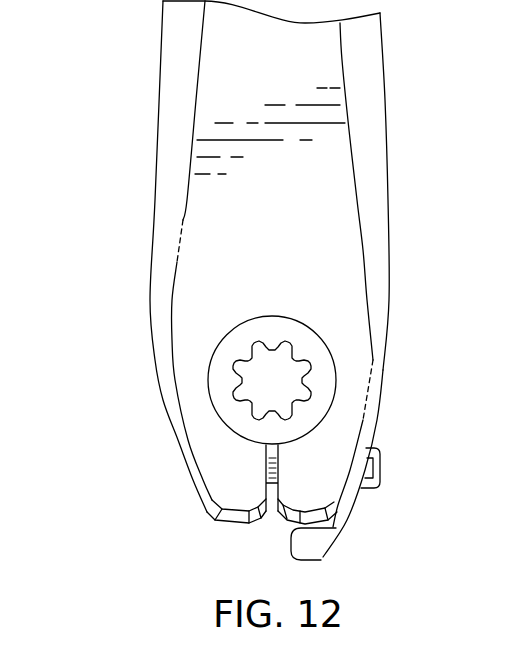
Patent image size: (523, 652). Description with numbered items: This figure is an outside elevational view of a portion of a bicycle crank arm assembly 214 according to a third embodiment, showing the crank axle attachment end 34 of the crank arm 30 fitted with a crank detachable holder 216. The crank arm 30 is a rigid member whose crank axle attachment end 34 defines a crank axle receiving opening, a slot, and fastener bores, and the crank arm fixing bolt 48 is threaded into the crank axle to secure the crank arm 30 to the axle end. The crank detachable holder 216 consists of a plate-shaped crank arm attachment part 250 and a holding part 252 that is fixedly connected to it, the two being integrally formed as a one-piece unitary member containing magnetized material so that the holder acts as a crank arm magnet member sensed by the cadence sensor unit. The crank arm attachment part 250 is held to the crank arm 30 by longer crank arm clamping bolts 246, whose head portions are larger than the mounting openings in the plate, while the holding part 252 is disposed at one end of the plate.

The crank arm 30 is at (160, 65).
The bicycle crank arm assembly 214 is at (130, 144).
The crank axle attachment end 34 is at (190, 390).
The crank arm fixing bolt 48 is at (299, 320).
The crank detachable holder 216 is at (331, 471).
The crank arm clamping bolts 246 is at (383, 468).
The crank arm attachment part 250 is at (355, 503).
The holding part 252 is at (290, 543).